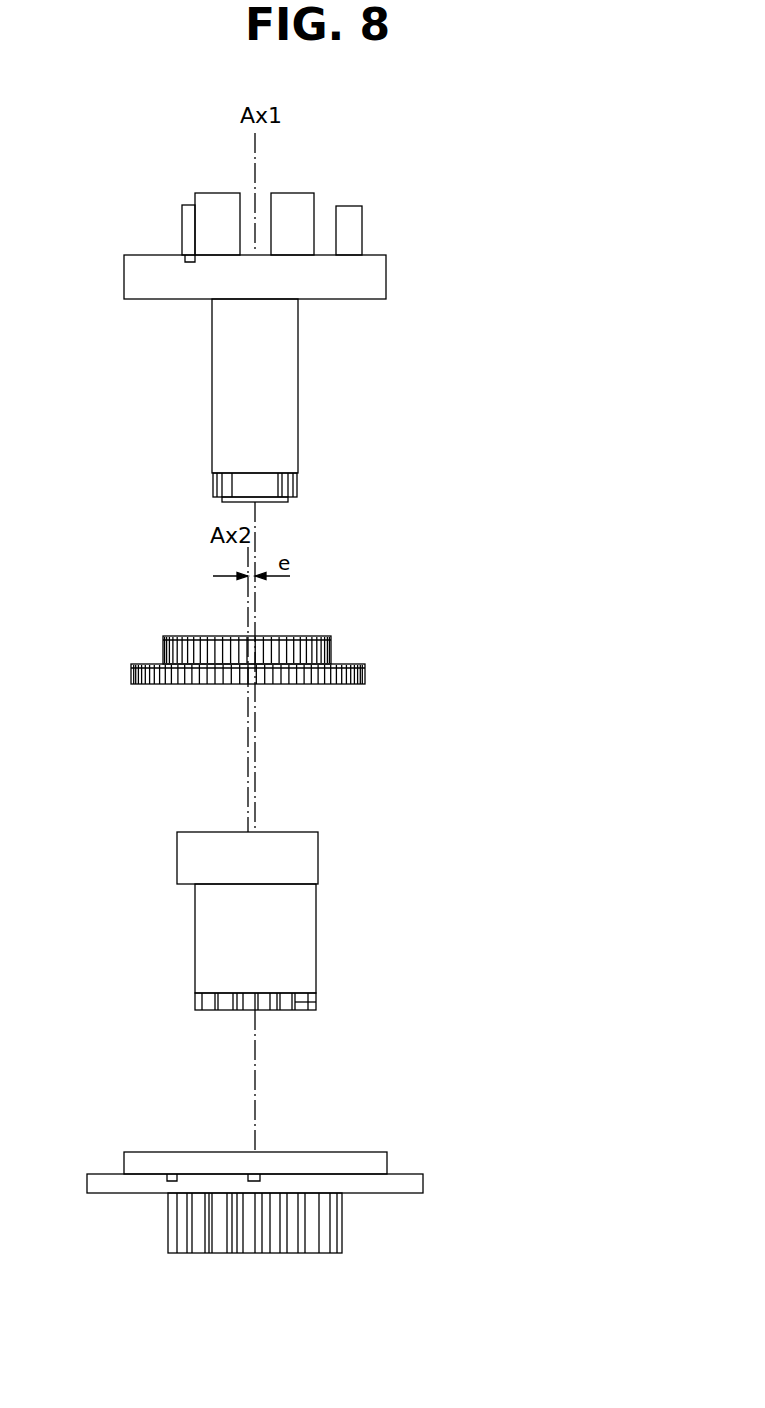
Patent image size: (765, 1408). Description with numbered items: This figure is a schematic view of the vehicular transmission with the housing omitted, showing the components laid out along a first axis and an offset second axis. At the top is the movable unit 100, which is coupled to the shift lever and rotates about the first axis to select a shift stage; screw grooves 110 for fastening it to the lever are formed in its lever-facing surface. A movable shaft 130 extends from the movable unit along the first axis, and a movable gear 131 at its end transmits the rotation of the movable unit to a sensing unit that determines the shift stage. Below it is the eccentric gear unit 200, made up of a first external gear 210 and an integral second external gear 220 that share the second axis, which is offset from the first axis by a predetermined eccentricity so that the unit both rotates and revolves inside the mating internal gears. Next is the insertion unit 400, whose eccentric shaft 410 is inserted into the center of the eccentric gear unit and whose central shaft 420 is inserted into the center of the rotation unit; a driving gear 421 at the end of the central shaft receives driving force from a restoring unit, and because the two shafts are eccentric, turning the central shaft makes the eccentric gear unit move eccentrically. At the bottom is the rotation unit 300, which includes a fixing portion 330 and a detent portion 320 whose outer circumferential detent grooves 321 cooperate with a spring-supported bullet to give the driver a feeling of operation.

The movable unit 100 is at (319, 312).
The screw groove 110 is at (293, 205).
The movable shaft 130 is at (282, 381).
The movable gear 131 is at (288, 484).
The eccentric gear unit 200 is at (311, 649).
The first external gear 210 is at (322, 648).
The second external gear 220 is at (365, 673).
The rotation unit 300 is at (314, 1212).
The detent portion 320 is at (317, 1245).
The detent groove 321 is at (330, 1237).
The fixing portion 330 is at (420, 1181).
The insertion unit 400 is at (313, 939).
The eccentric shaft 410 is at (305, 858).
The central shaft 420 is at (302, 967).
The driving gear 421 is at (312, 1003).